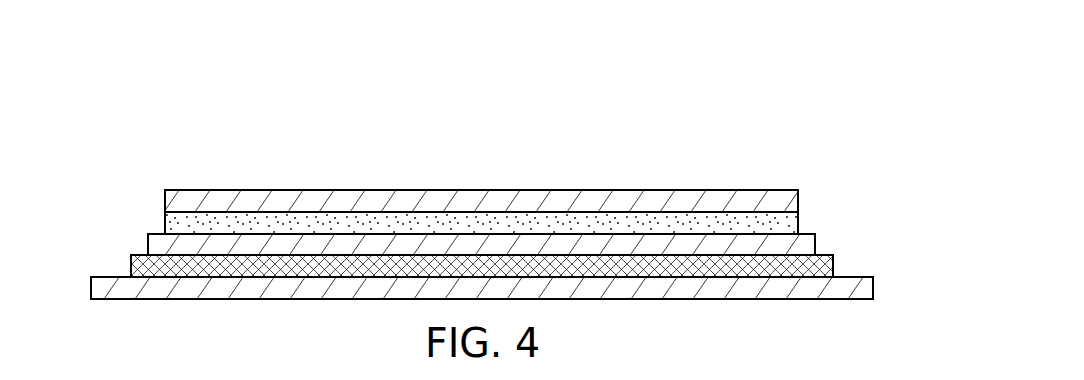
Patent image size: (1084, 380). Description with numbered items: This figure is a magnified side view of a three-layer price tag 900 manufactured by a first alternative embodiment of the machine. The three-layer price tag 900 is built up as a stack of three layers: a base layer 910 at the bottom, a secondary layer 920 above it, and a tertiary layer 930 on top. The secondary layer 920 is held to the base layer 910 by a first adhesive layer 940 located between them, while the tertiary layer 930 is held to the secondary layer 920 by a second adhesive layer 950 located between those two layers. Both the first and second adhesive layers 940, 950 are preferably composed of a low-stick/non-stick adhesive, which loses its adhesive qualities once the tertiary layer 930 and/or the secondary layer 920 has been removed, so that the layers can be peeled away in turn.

The three-layer price tag 900 is at (502, 158).
The base layer 910 is at (871, 291).
The secondary layer 920 is at (815, 243).
The tertiary layer 930 is at (799, 197).
The first adhesive layer 940 is at (134, 264).
The second adhesive layer 950 is at (170, 224).